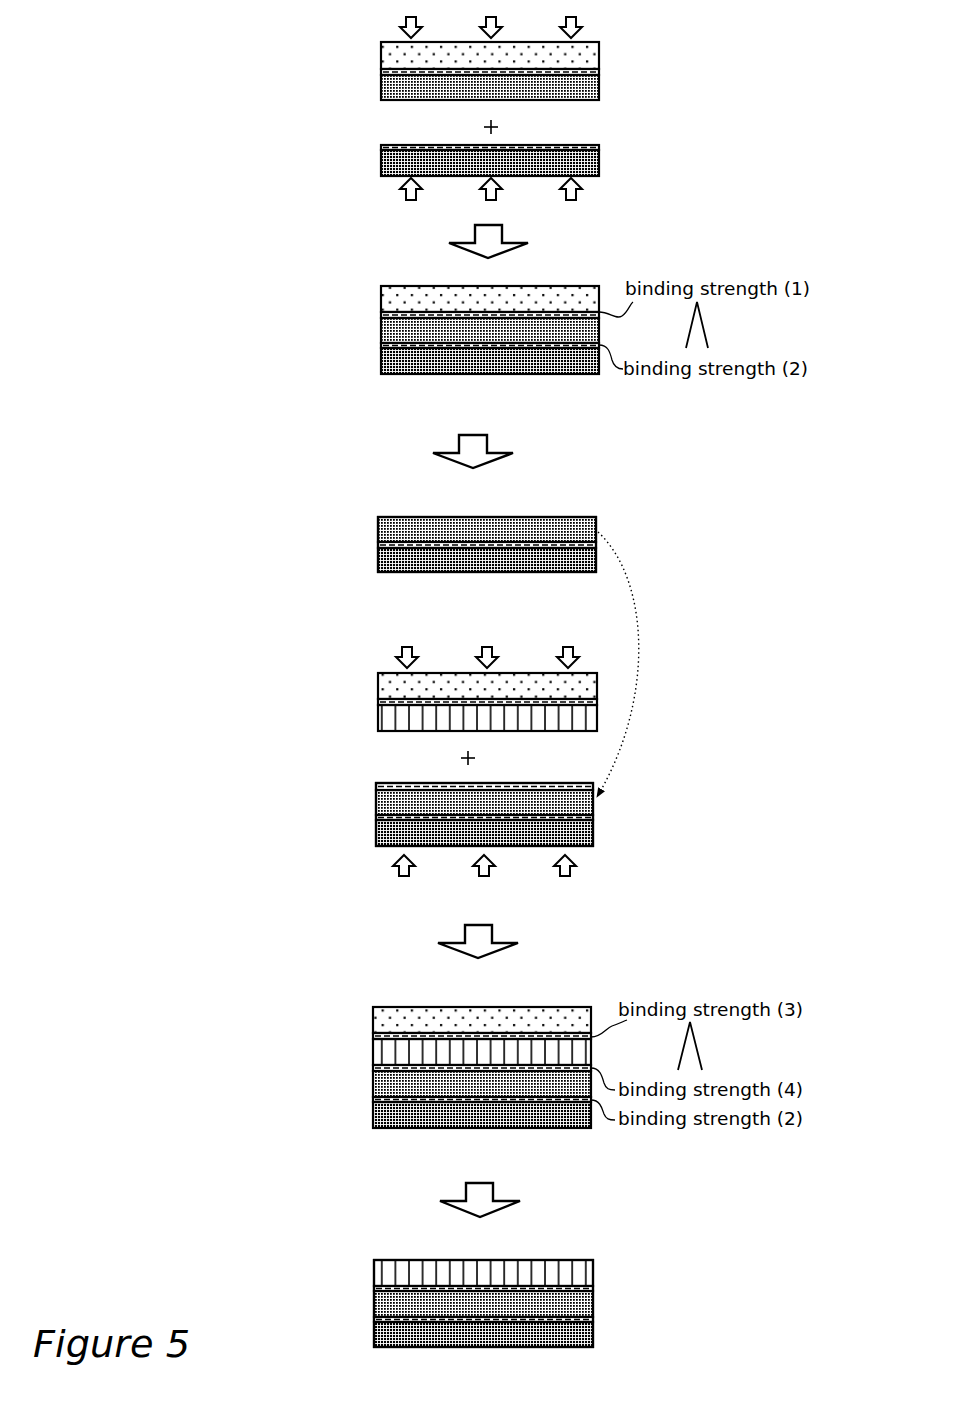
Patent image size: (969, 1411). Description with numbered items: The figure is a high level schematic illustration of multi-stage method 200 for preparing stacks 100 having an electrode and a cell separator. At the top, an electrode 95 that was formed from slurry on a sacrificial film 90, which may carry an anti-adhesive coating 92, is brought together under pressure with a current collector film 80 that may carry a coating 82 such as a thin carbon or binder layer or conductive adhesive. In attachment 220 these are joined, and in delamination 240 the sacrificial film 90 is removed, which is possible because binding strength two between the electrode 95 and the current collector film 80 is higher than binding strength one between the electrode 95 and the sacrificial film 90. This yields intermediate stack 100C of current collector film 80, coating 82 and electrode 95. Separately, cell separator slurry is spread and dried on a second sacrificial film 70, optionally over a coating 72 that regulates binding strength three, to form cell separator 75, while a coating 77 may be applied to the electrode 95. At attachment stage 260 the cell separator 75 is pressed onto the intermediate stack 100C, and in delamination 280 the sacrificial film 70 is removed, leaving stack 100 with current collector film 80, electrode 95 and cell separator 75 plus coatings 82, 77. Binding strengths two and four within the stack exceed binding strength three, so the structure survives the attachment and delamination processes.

The sacrificial film 90 is at (381, 53).
The anti-adhesive coating 92 is at (381, 73).
The electrode 95 is at (381, 90).
The coating 82 is at (381, 147).
The current collector film 80 is at (381, 168).
The sacrificial film 70 is at (378, 683).
The coating 72 is at (378, 702).
The cell separator 75 is at (378, 720).
The coating 77 is at (376, 787).
The method 200 is at (258, 107).
The attachment 220 is at (402, 199).
The delamination 240 is at (433, 453).
The attachment stage 260 is at (438, 943).
The delamination 280 is at (440, 1201).
The intermediate stack 100C is at (378, 585).
The stack 100 is at (613, 1298).